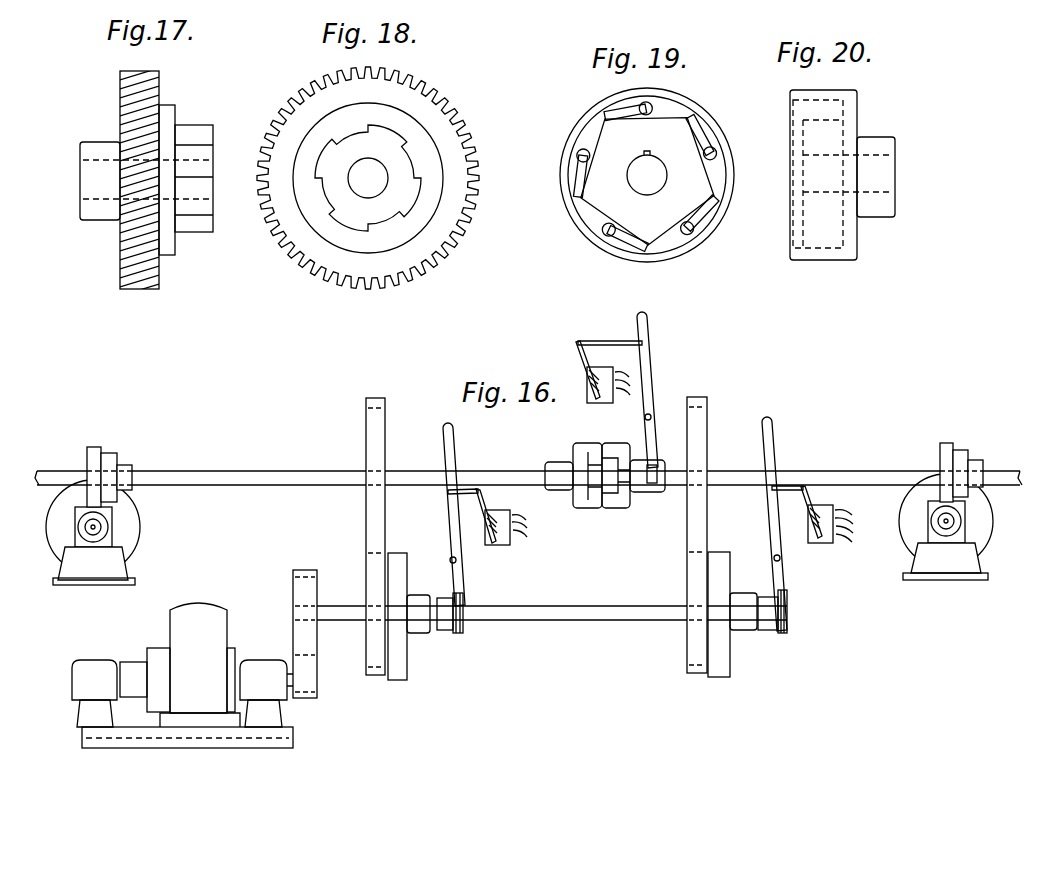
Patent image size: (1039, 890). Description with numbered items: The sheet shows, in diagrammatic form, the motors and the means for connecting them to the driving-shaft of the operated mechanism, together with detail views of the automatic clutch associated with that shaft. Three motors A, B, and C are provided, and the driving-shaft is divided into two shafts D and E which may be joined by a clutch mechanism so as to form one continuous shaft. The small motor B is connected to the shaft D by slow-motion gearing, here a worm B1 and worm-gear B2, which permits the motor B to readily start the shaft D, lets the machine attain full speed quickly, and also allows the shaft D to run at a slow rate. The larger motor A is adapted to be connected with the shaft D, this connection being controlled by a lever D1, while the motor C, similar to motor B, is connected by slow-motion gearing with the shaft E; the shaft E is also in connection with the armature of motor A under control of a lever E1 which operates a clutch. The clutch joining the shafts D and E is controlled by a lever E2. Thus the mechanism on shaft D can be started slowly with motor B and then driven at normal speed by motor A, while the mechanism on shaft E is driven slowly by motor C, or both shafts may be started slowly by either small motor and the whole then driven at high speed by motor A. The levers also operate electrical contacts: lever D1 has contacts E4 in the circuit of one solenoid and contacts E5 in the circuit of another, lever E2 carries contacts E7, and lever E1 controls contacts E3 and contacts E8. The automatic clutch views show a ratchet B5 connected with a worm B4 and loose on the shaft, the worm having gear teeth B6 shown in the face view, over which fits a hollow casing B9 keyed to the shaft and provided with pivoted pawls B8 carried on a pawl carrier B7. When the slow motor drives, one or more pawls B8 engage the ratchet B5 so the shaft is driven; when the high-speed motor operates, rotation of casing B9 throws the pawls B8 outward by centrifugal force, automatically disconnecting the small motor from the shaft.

In FIG. 16, the motor A is at (213, 614).
In FIG. 16, the motor B is at (133, 528).
In FIG. 16, the worm B1 is at (82, 526).
In FIG. 16, the worm-gear B2 is at (98, 453).
In FIG. 17, the worm B4 is at (145, 284).
In FIG. 17, the ratchet B5 is at (200, 233).
In FIG. 18, the ratchet B5 is at (330, 208).
In FIG. 18, the gear teeth B6 is at (414, 268).
In FIG. 19, the pawl carrier B7 is at (605, 206).
In FIG. 19, the pivoted pawls B8 is at (627, 236).
In FIG. 19, the hollow casing B9 is at (707, 226).
In FIG. 20, the hollow casing B9 is at (825, 262).
In FIG. 16, the motor C is at (985, 520).
In FIG. 16, the shaft D is at (487, 473).
In FIG. 16, the lever D1 is at (450, 531).
In FIG. 16, the shaft E is at (755, 537).
In FIG. 16, the lever E1 is at (772, 535).
In FIG. 16, the lever E2 is at (647, 366).
In FIG. 16, the contacts E3 is at (826, 543).
In FIG. 16, the contacts E4 is at (502, 543).
In FIG. 16, the contacts E5 is at (500, 510).
In FIG. 16, the contacts E7 is at (610, 370).
In FIG. 16, the contacts E8 is at (822, 520).